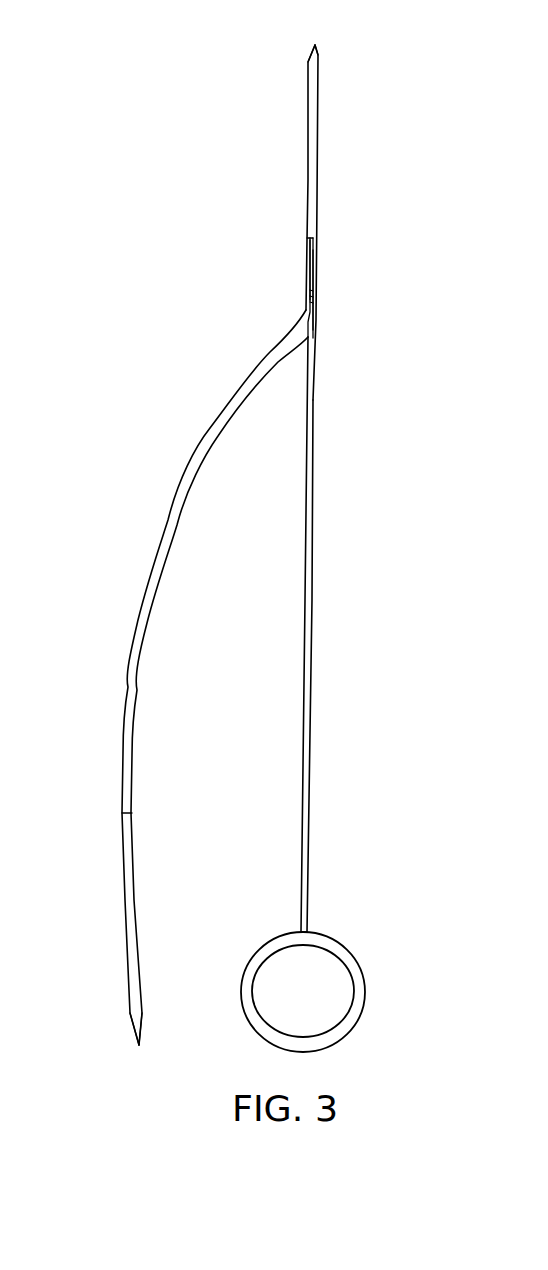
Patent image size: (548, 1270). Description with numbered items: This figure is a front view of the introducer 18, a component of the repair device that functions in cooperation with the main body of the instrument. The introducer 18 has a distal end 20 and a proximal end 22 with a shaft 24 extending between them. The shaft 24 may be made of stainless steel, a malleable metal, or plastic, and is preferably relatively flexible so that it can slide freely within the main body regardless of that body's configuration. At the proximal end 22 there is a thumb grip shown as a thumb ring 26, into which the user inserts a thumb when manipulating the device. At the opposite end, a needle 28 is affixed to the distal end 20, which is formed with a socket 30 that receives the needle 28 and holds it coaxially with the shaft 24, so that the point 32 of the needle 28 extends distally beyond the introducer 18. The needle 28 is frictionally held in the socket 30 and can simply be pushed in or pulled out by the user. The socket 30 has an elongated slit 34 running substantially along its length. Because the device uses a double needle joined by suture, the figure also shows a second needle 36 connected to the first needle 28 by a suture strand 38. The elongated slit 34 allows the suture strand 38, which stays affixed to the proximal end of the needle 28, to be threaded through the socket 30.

The introducer 18 is at (353, 462).
The distal end 20 is at (320, 273).
The proximal end 22 is at (313, 922).
The shaft 24 is at (315, 609).
The thumb ring 26 is at (367, 995).
The needle 28 is at (312, 135).
The socket 30 is at (307, 243).
The point 32 is at (314, 47).
The elongated slit 34 is at (314, 262).
The second needle 36 is at (130, 927).
The suture strand 38 is at (162, 541).